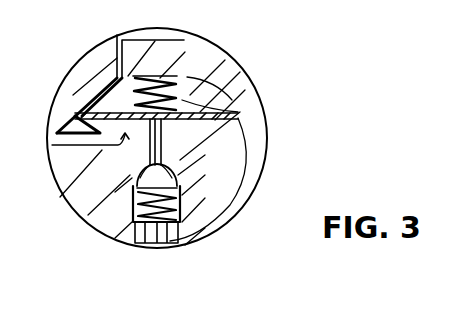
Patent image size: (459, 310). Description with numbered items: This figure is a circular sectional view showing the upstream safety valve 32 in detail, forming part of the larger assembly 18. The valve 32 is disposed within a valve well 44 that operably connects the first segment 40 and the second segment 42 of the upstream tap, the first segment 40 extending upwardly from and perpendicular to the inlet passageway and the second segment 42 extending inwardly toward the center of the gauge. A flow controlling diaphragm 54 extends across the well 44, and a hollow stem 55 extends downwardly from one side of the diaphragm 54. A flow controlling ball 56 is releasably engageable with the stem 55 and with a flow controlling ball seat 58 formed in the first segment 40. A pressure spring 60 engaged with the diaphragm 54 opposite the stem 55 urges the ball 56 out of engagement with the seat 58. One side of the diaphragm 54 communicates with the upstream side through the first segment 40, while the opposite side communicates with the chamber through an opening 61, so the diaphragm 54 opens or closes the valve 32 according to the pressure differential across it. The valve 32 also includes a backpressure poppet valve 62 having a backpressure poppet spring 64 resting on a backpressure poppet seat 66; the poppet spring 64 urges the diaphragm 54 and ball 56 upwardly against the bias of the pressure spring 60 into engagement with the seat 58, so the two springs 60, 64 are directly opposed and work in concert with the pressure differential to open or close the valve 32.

The valve assembly 18 is at (452, 17).
The upstream safety valve 32 is at (124, 138).
The first segment 40 is at (172, 237).
The second segment 42 is at (55, 165).
The valve well 44 is at (140, 68).
The flow controlling diaphragm 54 is at (225, 100).
The hollow stem 55 is at (185, 133).
The flow controlling ball 56 is at (182, 195).
The flow controlling ball seat 58 is at (190, 150).
The pressure spring 60 is at (184, 78).
The opening 61 is at (115, 58).
The backpressure poppet valve 62 is at (100, 228).
The backpressure poppet spring 64 is at (178, 190).
The backpressure poppet seat 66 is at (135, 247).